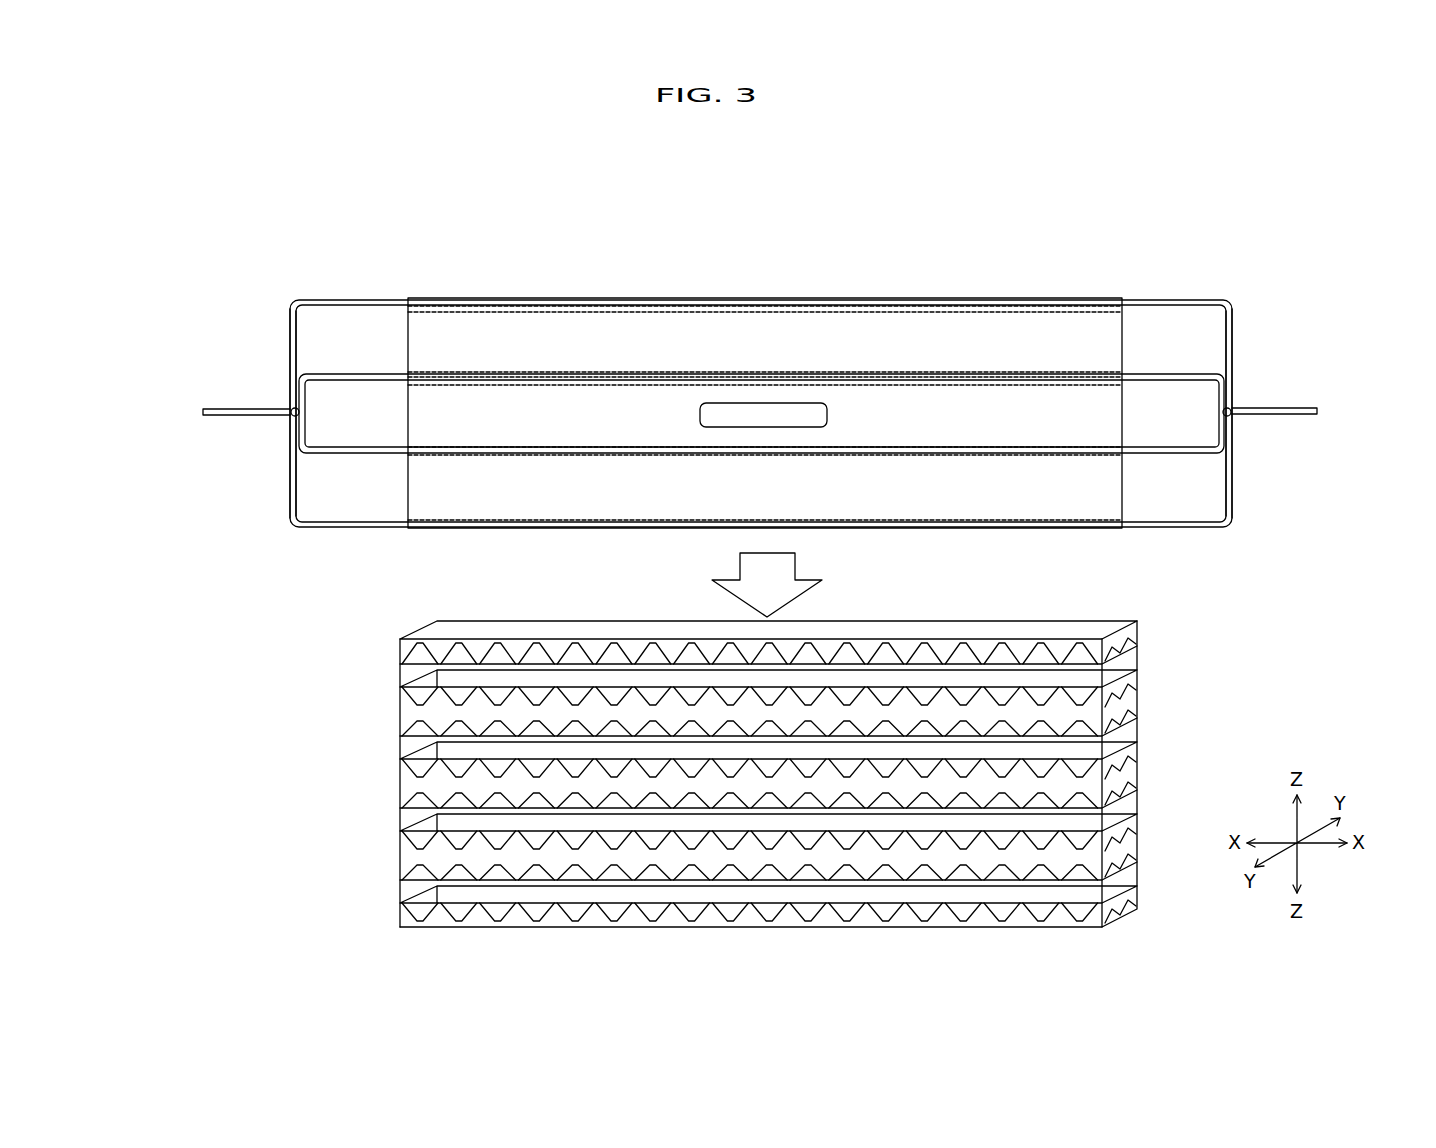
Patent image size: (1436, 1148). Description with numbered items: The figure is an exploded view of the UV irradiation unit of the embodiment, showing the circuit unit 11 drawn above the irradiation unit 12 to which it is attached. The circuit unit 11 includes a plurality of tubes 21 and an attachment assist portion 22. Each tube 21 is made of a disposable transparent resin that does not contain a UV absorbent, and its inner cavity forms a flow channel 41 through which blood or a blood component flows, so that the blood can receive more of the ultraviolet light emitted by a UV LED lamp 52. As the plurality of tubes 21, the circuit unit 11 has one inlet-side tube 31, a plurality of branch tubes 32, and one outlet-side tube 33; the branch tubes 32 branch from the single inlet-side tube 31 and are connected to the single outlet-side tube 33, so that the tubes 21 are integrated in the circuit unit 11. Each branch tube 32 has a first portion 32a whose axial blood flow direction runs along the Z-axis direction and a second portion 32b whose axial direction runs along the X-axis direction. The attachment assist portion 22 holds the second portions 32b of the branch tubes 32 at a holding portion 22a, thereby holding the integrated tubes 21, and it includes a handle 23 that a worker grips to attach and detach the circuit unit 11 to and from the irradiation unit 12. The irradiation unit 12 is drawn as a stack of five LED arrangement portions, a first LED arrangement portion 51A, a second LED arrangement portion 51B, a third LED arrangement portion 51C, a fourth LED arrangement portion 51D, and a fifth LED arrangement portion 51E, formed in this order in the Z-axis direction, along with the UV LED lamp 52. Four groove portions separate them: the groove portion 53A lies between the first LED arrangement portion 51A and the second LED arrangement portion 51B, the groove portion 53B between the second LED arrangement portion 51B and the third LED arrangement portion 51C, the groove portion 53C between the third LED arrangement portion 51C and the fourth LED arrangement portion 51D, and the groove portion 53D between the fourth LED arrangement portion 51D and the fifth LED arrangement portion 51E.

The circuit unit 11 is at (1088, 268).
The irradiation unit 12 is at (1076, 605).
The tube 21 is at (1236, 353).
The attachment assist portion 22 is at (748, 345).
The holding portion 22a is at (570, 300).
The handle 23 is at (811, 410).
The inlet-side tube 31 is at (215, 420).
The branch tube 32 is at (717, 417).
The first portion 32a is at (290, 358).
The second portion 32b is at (761, 417).
The flow channel 41 is at (383, 378).
The outlet-side tube 33 is at (1303, 420).
The first LED arrangement portion 51A is at (1137, 645).
The second LED arrangement portion 51B is at (1122, 710).
The third LED arrangement portion 51C is at (1123, 772).
The fourth LED arrangement portion 51D is at (1125, 843).
The fifth LED arrangement portion 51E is at (1128, 900).
The UV LED lamp 52 is at (410, 636).
The groove portion 53A is at (1123, 667).
The groove portion 53B is at (1125, 740).
The groove portion 53C is at (1123, 809).
The groove portion 53D is at (1123, 878).